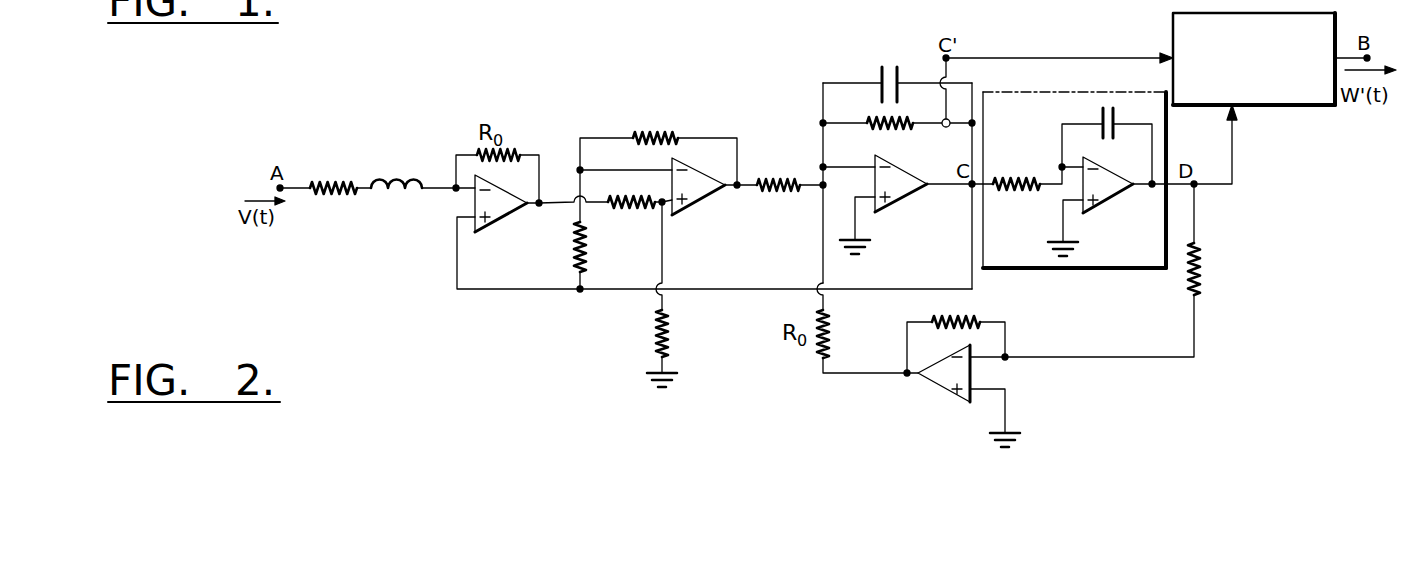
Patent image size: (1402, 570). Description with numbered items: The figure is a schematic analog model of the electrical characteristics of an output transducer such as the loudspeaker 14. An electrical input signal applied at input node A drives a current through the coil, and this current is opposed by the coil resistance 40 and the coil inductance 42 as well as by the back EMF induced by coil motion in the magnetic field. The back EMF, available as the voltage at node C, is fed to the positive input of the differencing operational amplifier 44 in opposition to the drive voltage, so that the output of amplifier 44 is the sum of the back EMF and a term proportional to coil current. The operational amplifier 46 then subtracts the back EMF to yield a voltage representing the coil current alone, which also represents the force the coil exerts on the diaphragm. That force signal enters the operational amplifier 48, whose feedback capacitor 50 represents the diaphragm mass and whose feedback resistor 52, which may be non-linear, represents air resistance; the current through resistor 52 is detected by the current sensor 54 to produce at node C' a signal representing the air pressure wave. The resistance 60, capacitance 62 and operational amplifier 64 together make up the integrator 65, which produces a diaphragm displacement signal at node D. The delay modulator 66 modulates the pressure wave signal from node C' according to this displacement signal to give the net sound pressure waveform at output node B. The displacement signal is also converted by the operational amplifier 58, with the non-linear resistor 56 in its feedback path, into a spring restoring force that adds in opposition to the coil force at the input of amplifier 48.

The loudspeaker 14 is at (445, 93).
The coil resistance 40 is at (333, 203).
The coil inductance 42 is at (396, 169).
The differencing operational amplifier 44 is at (498, 216).
The operational amplifier 46 is at (712, 232).
The operational amplifier 48 is at (915, 226).
The feedback capacitor 50 is at (897, 82).
The feedback resistor 52 is at (897, 138).
The current sensor 54 is at (945, 106).
The non-linear resistor 56 is at (954, 336).
The operational amplifier 58 is at (943, 390).
The resistance 60 is at (1027, 174).
The capacitance 62 is at (1107, 142).
The operational amplifier 64 is at (1121, 228).
The integrator 65 is at (1019, 121).
The delay modulator 66 is at (1238, 93).